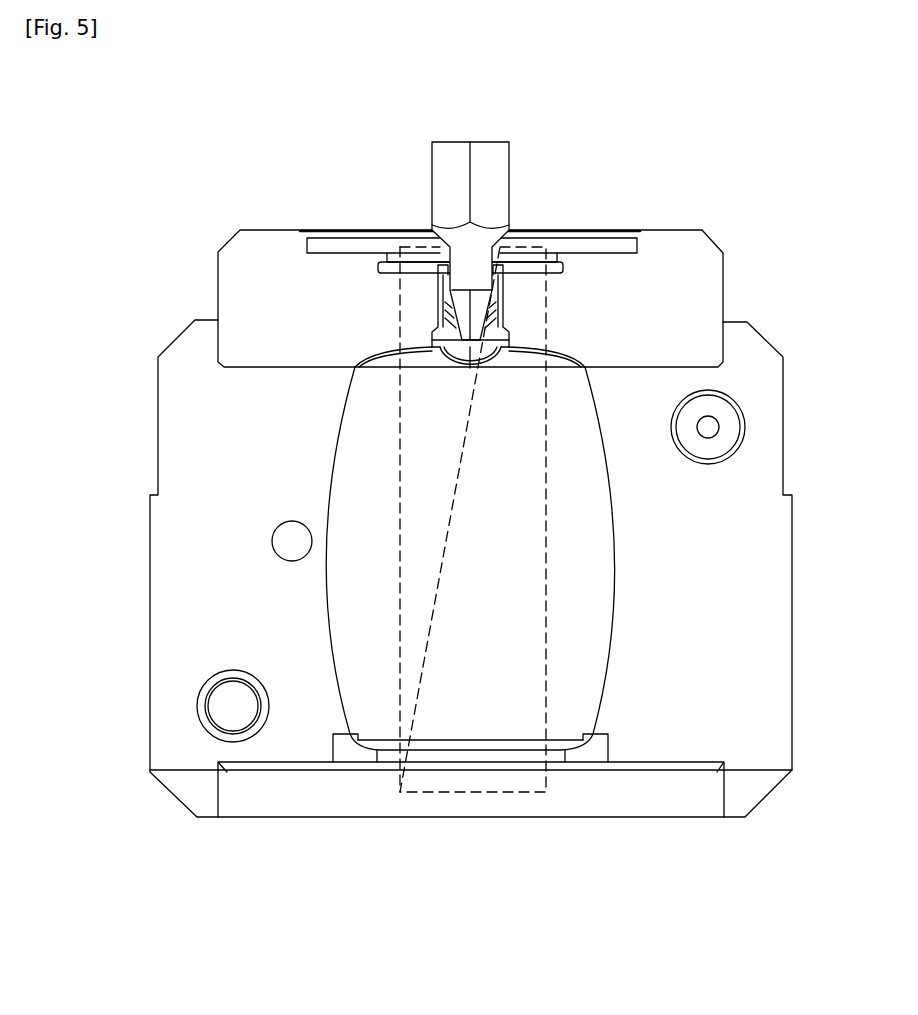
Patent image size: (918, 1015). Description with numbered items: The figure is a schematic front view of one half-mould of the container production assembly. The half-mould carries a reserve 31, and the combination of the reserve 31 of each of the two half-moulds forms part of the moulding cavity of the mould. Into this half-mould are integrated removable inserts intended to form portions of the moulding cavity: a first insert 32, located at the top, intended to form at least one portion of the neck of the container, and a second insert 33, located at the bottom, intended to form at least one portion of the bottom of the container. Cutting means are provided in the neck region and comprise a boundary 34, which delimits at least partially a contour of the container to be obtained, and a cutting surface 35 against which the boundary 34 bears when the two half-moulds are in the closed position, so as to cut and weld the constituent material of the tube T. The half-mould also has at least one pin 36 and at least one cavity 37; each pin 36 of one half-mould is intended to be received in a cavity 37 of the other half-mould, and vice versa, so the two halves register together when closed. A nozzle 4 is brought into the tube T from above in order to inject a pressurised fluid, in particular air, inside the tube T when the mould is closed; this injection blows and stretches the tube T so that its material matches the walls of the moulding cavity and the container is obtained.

The nozzle 4 is at (428, 168).
The reserve 31 is at (365, 677).
The first insert 32 is at (710, 280).
The second insert 33 is at (628, 805).
The boundary 34 is at (372, 349).
The cutting surface 35 is at (470, 310).
The pin 36 is at (728, 422).
The cavity 37 is at (290, 543).
The tube T is at (548, 313).